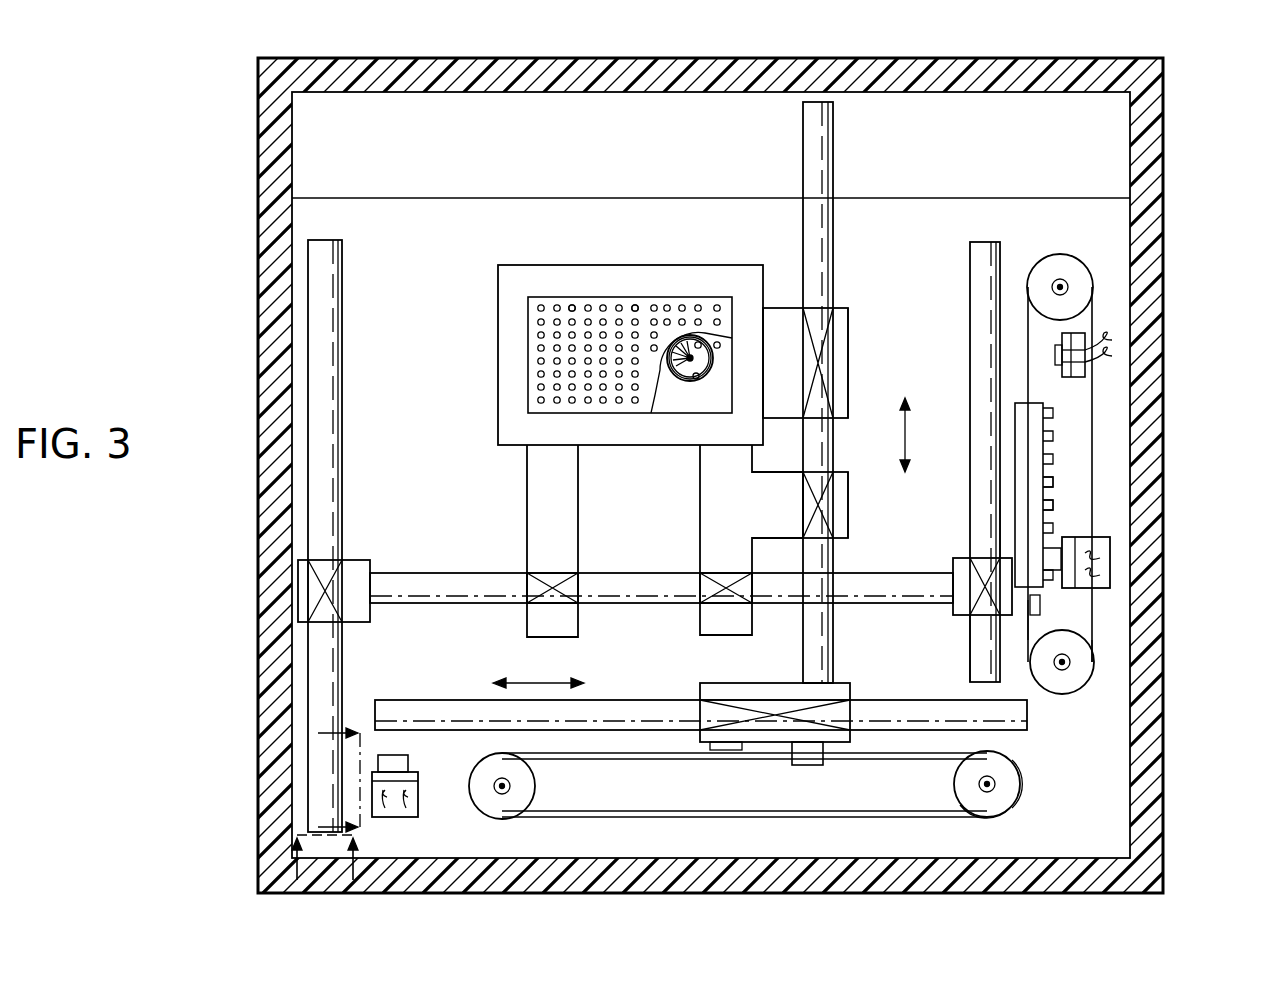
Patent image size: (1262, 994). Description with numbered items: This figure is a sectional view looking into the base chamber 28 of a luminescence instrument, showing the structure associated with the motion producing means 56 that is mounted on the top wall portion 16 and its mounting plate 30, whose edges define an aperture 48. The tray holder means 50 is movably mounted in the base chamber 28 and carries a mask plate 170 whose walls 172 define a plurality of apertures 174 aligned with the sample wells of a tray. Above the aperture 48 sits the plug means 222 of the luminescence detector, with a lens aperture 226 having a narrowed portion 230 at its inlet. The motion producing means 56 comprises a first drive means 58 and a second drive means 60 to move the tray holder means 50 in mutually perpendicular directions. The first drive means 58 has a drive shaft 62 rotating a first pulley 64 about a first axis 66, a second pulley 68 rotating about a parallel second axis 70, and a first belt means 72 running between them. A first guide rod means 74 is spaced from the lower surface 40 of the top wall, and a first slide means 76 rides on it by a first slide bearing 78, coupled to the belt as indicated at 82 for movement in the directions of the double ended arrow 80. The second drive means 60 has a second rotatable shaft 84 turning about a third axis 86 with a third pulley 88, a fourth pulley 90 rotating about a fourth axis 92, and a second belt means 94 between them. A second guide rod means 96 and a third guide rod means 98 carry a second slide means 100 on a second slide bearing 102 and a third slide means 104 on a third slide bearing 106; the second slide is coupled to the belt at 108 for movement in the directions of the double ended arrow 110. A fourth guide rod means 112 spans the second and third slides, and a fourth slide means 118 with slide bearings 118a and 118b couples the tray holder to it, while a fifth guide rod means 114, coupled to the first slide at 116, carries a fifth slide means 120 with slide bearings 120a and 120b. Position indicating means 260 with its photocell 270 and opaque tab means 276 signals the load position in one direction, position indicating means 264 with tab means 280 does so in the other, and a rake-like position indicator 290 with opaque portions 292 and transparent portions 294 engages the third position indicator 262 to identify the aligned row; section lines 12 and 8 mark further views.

The base chamber 28 is at (1070, 160).
The top wall portion 16 is at (711, 160).
The mounting plate 30 is at (406, 333).
The lower surface 40 is at (414, 505).
The tray holder means 50 is at (494, 288).
The mask plate 170 is at (556, 350).
The walls 172 is at (572, 305).
The apertures 174 is at (635, 305).
The aperture edges 48 is at (687, 378).
The lens aperture 226 is at (690, 335).
The narrowed portion 230 is at (697, 380).
The plug means 222 is at (690, 351).
The third guide rod means 98 is at (342, 462).
The third slide means 104 is at (360, 560).
The third slide bearing 106 is at (342, 600).
The fourth guide rod means 112 is at (430, 600).
The slide bearing means 118a is at (545, 572).
The slide bearing means 118b is at (720, 572).
The fourth slide means 118 is at (578, 585).
The fifth guide rod means 114 is at (833, 176).
The slide bearing 120a is at (833, 355).
The slide bearing 120b is at (833, 515).
The fifth slide means 120 is at (840, 471).
The second guide rod means 96 is at (970, 340).
The second slide means 100 is at (953, 562).
The second slide bearing 102 is at (993, 558).
The coupling 108 is at (975, 664).
The double ended arrow 110 is at (905, 455).
The fourth pulley 90 is at (1082, 262).
The fourth axis 92 is at (1063, 288).
The motion producing means 56 is at (1082, 692).
The second rotatable shaft 84 is at (1068, 696).
The third pulley 88 is at (1068, 661).
The second drive means 60 is at (1066, 622).
The third axis 86 is at (1096, 691).
The position indicating means 264 is at (1085, 340).
The second belt means 94 is at (1112, 356).
The rake-like position indicator 290 is at (1053, 421).
The opaque portions 292 is at (1053, 482).
The transparent portions 294 is at (1053, 505).
The third position indicator 262 is at (1110, 560).
The tab means 280 is at (1030, 606).
The first guide rod means 74 is at (640, 700).
The first slide means 76 is at (726, 683).
The coupling 116 is at (790, 683).
The first slide bearing 78 is at (835, 700).
The opaque tab means 276 is at (720, 752).
The coupling 82 is at (806, 765).
The double ended arrow 80 is at (560, 683).
The second pulley 68 is at (492, 819).
The second axis 70 is at (510, 786).
The drive shaft 62 is at (1005, 768).
The first axis 66 is at (987, 785).
The first pulley 64 is at (996, 812).
The first drive means 58 is at (1018, 792).
The first belt means 72 is at (830, 818).
The position indicating means 260 is at (395, 817).
The photocell 270 is at (400, 760).
The section line 12- 12 is at (339, 766).
The section line 8- 8 is at (333, 862).